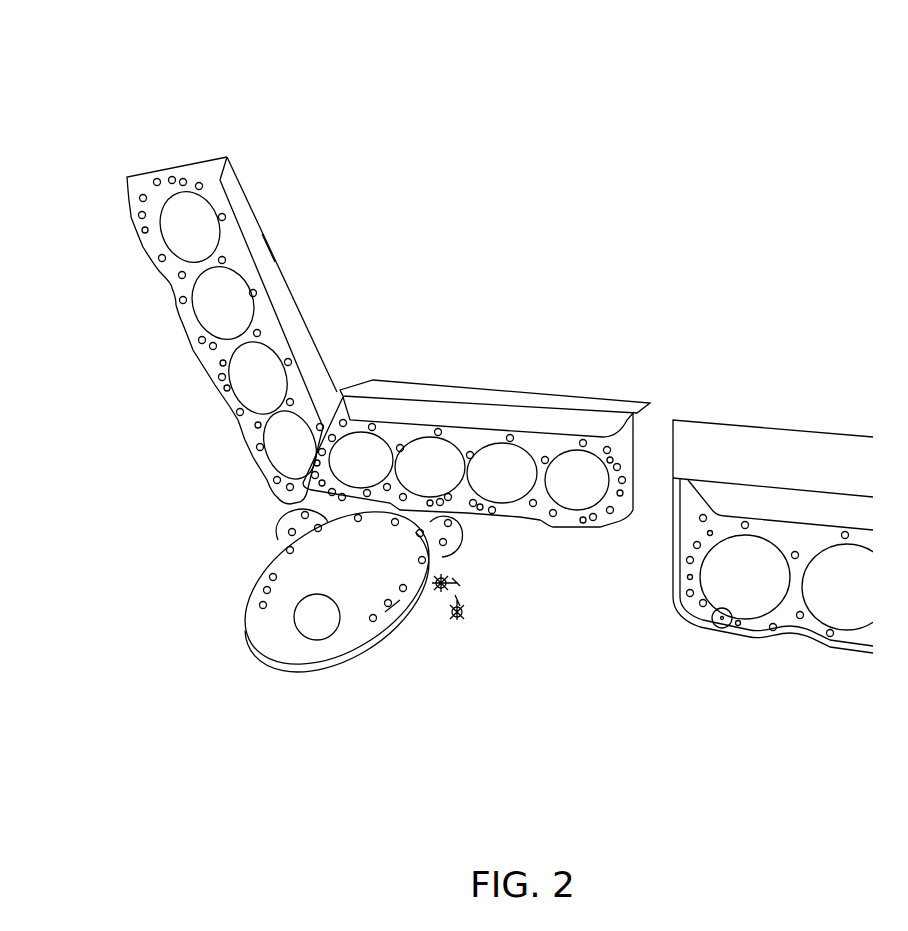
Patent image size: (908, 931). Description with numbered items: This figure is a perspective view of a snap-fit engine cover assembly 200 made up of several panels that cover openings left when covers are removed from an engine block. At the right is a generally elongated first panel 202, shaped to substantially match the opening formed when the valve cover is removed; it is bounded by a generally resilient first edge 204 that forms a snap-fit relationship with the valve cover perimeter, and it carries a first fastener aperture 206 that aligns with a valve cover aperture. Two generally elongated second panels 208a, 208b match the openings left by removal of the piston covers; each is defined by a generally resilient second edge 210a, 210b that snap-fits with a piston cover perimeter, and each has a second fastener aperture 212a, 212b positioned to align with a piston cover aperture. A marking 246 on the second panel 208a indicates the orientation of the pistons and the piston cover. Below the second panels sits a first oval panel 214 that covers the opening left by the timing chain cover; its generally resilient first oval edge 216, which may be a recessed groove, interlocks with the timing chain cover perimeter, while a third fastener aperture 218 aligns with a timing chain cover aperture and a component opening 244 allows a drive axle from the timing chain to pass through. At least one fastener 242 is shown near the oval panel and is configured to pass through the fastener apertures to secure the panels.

The snap-fit engine cover assembly 200 is at (143, 82).
The first panel 202 is at (763, 407).
The first edge 204 is at (852, 657).
The first fastener aperture 206 is at (773, 631).
The second panel 208a is at (277, 225).
The second panel 208b is at (533, 387).
The second edge 210a is at (243, 180).
The second edge 210b is at (510, 520).
The second fastener aperture 212a is at (200, 183).
The second fastener aperture 212b is at (594, 520).
The first oval panel 214 is at (237, 628).
The first oval edge 216 is at (338, 663).
The third fastener aperture 218 is at (395, 607).
The fastener 242 is at (460, 623).
The component opening 244 is at (300, 638).
The marking 246 is at (288, 292).